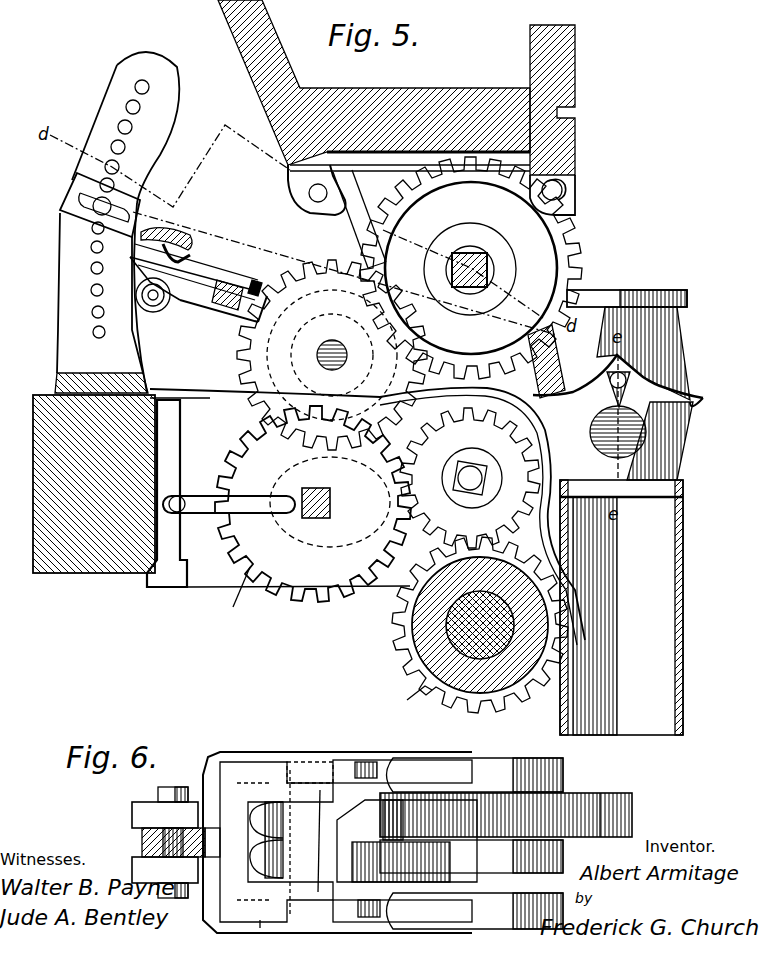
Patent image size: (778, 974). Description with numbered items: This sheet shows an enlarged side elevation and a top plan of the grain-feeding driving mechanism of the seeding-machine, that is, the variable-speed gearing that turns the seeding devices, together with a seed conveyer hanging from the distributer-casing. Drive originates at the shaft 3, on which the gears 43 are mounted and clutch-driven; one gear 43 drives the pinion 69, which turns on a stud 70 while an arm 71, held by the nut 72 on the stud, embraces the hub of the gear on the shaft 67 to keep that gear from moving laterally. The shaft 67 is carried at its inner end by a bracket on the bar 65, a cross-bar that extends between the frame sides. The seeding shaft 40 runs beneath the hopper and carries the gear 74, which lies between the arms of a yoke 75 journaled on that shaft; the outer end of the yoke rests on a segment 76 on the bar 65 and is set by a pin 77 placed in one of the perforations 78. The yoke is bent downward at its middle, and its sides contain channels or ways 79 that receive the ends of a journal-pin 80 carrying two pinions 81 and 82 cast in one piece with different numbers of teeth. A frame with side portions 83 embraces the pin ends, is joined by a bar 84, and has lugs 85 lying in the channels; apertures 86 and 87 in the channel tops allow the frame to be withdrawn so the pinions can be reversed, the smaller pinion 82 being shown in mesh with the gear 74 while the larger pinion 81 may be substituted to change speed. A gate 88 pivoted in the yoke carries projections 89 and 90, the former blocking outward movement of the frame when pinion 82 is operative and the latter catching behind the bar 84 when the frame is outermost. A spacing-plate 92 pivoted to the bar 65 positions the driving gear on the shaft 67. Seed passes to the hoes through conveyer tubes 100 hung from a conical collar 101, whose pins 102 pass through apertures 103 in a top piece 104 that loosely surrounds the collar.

In FIG. 5, the shaft 3 is at (480, 625).
In FIG. 5, the shaft 40 is at (472, 287).
In FIG. 5, the gears 43 is at (418, 706).
In FIG. 5, the bar 65 is at (94, 484).
In FIG. 5, the shaft 67 is at (315, 520).
In FIG. 5, the pinion 69 is at (470, 478).
In FIG. 5, the stud 70 is at (476, 470).
In FIG. 5, the arm 71 is at (457, 480).
In FIG. 5, the nut 72 is at (460, 470).
In FIG. 5, the gear 74 is at (471, 268).
In FIG. 6, the gear 74 is at (598, 797).
In FIG. 5, the yoke 75 is at (462, 312).
In FIG. 5, the segment 76 is at (117, 222).
In FIG. 6, the segment 76 is at (145, 830).
In FIG. 5, the pin 77 is at (100, 206).
In FIG. 6, the pin 77 is at (165, 898).
In FIG. 5, the perforations 78 is at (103, 339).
In FIG. 6, the perforations 78 is at (170, 848).
In FIG. 5, the channels or ways 79 is at (205, 292).
In FIG. 5, the journal-pin 80 is at (342, 365).
In FIG. 6, the pinion 81 is at (471, 884).
In FIG. 6, the pinion 82 is at (506, 815).
In FIG. 6, the side portions 83 is at (475, 776).
In FIG. 6, the bar 84 is at (318, 845).
In FIG. 6, the lugs 85 is at (358, 762).
In FIG. 5, the cut-out portion or aperture 86 is at (165, 245).
In FIG. 6, the cut-out portion or aperture 86 is at (290, 760).
In FIG. 5, the cut-out portion or aperture 87 is at (256, 290).
In FIG. 6, the cut-out portion or aperture 87 is at (370, 917).
In FIG. 5, the gate 88 is at (173, 238).
In FIG. 6, the gate 88 is at (257, 840).
In FIG. 5, the lips or projections 89 is at (230, 276).
In FIG. 6, the lips or projections 89 is at (317, 892).
In FIG. 5, the lips or projections 90 is at (190, 258).
In FIG. 6, the lips or projections 90 is at (268, 920).
In FIG. 5, the spacing-plate 92 is at (255, 507).
In FIG. 5, the conveyers or tubes 100 is at (636, 592).
In FIG. 5, the collar 101 is at (548, 345).
In FIG. 5, the pins or lugs 102 is at (650, 372).
In FIG. 5, the apertures 103 is at (640, 390).
In FIG. 5, the top piece 104 is at (620, 467).